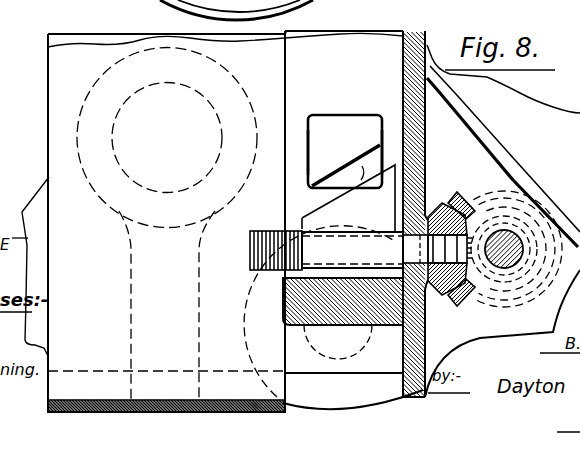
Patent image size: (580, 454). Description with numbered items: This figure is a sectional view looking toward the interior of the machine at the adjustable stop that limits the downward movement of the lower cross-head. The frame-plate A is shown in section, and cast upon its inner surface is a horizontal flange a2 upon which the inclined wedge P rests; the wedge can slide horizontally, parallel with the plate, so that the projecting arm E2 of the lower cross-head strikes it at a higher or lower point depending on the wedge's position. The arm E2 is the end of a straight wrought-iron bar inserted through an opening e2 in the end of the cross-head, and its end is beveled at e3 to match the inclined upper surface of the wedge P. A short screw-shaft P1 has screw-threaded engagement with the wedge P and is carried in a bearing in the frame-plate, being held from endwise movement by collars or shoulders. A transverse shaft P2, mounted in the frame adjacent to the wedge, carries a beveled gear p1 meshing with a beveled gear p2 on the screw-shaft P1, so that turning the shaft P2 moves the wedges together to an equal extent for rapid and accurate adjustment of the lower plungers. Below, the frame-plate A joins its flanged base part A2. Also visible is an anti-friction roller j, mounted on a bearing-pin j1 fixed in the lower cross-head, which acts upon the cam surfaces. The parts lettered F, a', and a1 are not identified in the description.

The frame casing F is at (225, 221).
The frame-plate A is at (413, 152).
The inclined arm of plate a' is at (503, 146).
The inclined arm of plate a1 is at (510, 163).
The projecting arm of the cross-head E2 is at (345, 151).
The opening in the end of the cross-head e2 is at (387, 156).
The beveled end of the bar e3 is at (346, 166).
The wedge P is at (387, 216).
The screw-shaft P1 is at (250, 243).
The transverse shaft P2 is at (504, 236).
The beveled gear p1 is at (458, 205).
The beveled gear p2 is at (489, 290).
The base part of the frame-plate A2 is at (502, 333).
The horizontal flange a2 is at (282, 300).
The bearing-pin j1 is at (316, 342).
The anti-friction roller j is at (353, 391).